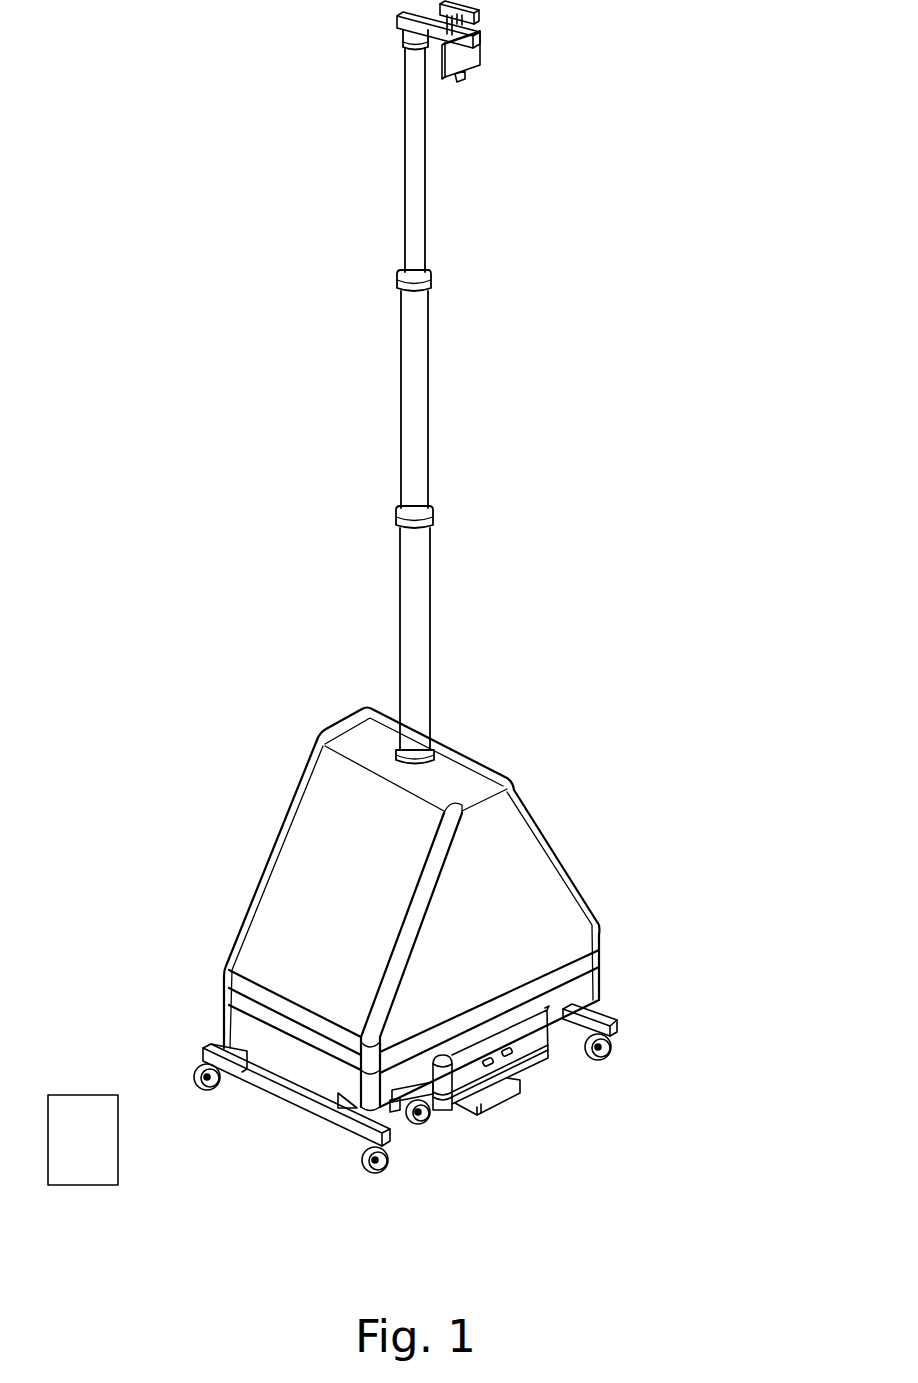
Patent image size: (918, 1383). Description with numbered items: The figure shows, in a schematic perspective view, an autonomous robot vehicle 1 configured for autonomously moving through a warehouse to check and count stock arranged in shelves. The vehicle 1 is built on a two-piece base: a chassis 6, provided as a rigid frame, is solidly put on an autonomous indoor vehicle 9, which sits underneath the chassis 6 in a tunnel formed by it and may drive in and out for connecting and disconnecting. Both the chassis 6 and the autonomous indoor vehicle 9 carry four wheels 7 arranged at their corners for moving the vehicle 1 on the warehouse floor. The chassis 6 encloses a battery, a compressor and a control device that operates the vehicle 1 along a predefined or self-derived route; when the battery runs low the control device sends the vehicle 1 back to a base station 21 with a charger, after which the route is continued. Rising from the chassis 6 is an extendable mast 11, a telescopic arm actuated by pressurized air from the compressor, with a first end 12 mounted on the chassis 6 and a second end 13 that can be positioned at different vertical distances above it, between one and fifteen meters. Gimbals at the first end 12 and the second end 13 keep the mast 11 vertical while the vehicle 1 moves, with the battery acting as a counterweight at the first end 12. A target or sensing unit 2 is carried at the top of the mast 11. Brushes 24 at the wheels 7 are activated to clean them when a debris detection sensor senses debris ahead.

The autonomous robot vehicle 1 is at (225, 873).
The target / camera unit 2 is at (500, 48).
The chassis 6 is at (310, 820).
The wheels 7 is at (207, 1092).
The autonomous indoor vehicle 9 is at (462, 1073).
The extendable mast 11 is at (412, 563).
The first end 12 is at (432, 760).
The second end 13 is at (403, 42).
The base station 21 is at (98, 1153).
The brushes 24 is at (407, 1115).